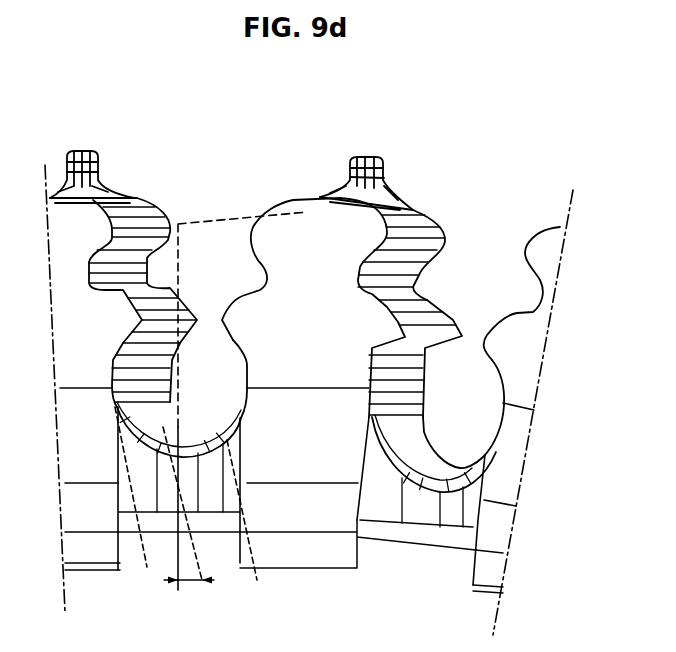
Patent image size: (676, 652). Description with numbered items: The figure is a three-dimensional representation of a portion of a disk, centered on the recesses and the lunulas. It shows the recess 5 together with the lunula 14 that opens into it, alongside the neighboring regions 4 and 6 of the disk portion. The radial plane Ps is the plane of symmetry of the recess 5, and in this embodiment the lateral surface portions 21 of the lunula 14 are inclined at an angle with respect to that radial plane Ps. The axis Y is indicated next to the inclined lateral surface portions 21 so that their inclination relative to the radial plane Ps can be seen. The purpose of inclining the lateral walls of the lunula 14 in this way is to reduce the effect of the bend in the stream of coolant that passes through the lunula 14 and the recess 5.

The base 4 is at (327, 619).
The recess 5 is at (467, 424).
The tooth 6 is at (327, 252).
The lunula 14 is at (420, 513).
The lateral surface portion 21 is at (121, 550).
The radial plane Ps is at (220, 219).
The axis Y is at (170, 578).